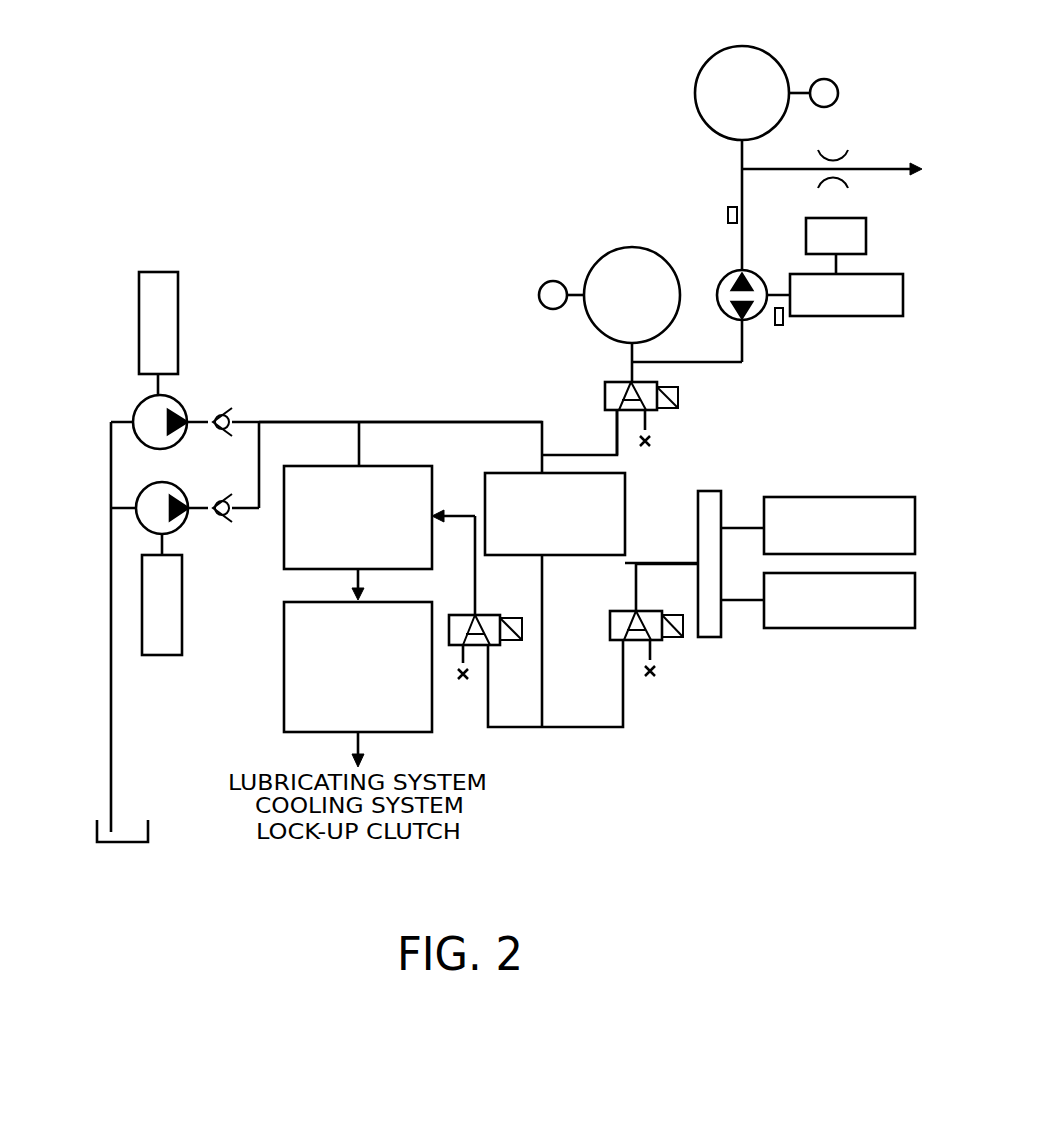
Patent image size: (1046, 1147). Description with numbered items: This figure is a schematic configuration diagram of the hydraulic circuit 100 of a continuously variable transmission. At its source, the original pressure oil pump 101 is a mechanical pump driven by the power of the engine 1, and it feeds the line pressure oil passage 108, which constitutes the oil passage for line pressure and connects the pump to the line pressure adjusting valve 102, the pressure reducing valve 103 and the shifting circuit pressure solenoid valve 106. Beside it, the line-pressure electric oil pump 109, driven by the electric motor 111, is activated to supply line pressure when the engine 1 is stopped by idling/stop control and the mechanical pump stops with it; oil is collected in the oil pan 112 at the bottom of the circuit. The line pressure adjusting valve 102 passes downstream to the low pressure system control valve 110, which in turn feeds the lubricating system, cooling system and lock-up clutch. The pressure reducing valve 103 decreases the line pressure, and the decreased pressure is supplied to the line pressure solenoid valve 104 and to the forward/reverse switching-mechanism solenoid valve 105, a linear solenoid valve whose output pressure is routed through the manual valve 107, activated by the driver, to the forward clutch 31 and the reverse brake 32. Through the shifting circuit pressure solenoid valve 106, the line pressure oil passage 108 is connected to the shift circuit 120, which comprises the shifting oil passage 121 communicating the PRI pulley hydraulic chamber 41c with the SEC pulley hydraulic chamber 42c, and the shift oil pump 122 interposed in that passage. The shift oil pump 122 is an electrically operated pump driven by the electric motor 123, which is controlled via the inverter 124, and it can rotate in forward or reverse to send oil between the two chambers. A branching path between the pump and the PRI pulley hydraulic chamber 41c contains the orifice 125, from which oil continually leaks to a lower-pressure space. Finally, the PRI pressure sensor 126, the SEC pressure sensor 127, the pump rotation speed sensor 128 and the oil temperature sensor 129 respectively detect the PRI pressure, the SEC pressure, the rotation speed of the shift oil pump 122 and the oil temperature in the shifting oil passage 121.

The engine 1 is at (178, 312).
The hydraulic circuit 100 is at (88, 660).
The original pressure oil pump 101 is at (138, 403).
The line pressure adjusting valve 102 is at (415, 464).
The pressure reducing valve 103 is at (627, 484).
The line pressure solenoid valve 104 is at (480, 612).
The forward/reverse switching-mechanism solenoid valve 105 is at (630, 610).
The shifting circuit pressure solenoid valve 106 is at (612, 381).
The manual valve 107 is at (706, 638).
The line pressure oil passage 108 is at (476, 420).
The line-pressure electric oil pump 109 is at (183, 528).
The low pressure system control valve 110 is at (284, 670).
The electric motor 111 is at (182, 586).
The oil pan 112 is at (150, 836).
The shift circuit 120 is at (568, 152).
The shifting oil passage 121 is at (712, 365).
The shift oil pump 122 is at (722, 276).
The electric motor 123 is at (845, 318).
The inverter 124 is at (866, 223).
The orifice 125 is at (836, 154).
The PRI pressure sensor 126 is at (835, 81).
The SEC pressure sensor 127 is at (545, 281).
The pump rotation speed sensor 128 is at (779, 326).
The oil temperature sensor 129 is at (730, 205).
The forward clutch 31 is at (843, 496).
The reverse brake 32 is at (843, 629).
The PRI pulley hydraulic chamber 41c is at (708, 56).
The SEC pulley hydraulic chamber 42c is at (598, 258).